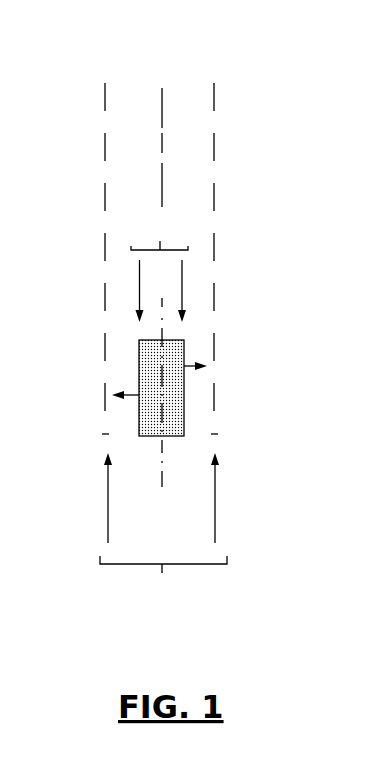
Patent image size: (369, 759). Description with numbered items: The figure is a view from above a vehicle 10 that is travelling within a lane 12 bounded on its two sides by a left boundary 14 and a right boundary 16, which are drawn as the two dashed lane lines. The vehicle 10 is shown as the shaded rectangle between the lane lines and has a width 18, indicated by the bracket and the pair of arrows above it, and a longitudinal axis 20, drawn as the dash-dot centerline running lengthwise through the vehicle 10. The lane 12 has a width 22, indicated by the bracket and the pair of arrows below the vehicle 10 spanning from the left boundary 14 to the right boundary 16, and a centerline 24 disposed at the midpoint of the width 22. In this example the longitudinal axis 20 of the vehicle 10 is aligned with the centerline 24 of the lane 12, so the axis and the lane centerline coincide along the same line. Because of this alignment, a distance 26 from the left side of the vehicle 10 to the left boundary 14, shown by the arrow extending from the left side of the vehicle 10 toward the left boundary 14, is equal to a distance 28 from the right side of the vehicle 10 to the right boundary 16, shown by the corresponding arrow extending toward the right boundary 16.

The vehicle 10 is at (128, 363).
The lane 12 is at (204, 66).
The left boundary 14 is at (104, 148).
The right boundary 16 is at (215, 148).
The width 18 is at (159, 269).
The longitudinal axis 20 is at (160, 482).
The width 22 is at (163, 530).
The centerline 24 is at (162, 92).
The distance 26 is at (131, 396).
The distance 28 is at (191, 367).